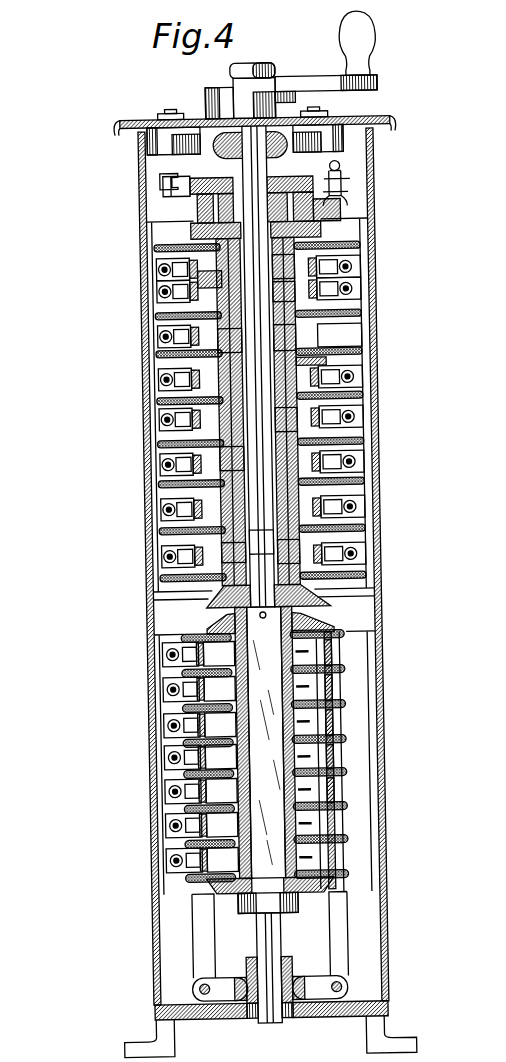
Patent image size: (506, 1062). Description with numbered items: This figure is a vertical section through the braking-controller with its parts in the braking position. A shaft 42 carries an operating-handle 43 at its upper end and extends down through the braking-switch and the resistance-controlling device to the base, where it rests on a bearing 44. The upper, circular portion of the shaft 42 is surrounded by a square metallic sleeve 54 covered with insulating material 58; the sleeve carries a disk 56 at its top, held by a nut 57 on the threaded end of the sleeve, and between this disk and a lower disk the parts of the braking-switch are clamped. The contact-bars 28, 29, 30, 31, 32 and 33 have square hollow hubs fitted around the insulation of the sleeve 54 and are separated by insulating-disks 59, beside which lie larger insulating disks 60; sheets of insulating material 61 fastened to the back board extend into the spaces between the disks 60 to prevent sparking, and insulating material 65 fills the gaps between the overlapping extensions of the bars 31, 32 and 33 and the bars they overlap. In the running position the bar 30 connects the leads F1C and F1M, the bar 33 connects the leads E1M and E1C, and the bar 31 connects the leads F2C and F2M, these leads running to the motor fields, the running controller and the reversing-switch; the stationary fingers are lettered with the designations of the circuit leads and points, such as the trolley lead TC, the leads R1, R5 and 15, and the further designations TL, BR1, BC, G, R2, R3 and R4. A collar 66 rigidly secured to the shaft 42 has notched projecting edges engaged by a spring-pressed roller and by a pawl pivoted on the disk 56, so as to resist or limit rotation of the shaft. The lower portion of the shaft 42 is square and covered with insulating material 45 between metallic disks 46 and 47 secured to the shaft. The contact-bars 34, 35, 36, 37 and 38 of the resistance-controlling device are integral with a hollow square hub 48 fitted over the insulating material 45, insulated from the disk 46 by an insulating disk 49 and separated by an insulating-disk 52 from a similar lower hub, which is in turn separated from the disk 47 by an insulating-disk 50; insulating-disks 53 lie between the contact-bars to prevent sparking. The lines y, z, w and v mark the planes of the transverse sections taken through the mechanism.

The operating-handle 43 is at (372, 88).
The collar 66 is at (196, 190).
The nut 57 is at (286, 184).
The disk 56 is at (327, 231).
The shaft 42 is at (262, 575).
The insulating material 65 is at (162, 248).
The trolley lead TC is at (198, 288).
The contact fingers TL is at (350, 289).
The contact-bar 28 is at (294, 266).
The insulating-disks 59 is at (262, 421).
The contact-bar 30 is at (292, 348).
The insulating material 58 is at (340, 335).
The insulating disks 60 is at (366, 353).
The sheets or boards of insulating material 61 is at (366, 364).
The contact-bar 29 is at (229, 340).
The brake resistance contact BR1 is at (192, 341).
The lead F1M is at (192, 385).
The lead F1C is at (335, 382).
The lead F2M is at (192, 426).
The lead F2C is at (335, 426).
The contact-bar 31 is at (293, 419).
The contact-bar 32 is at (224, 458).
The lead R5 is at (192, 471).
The brake contact BC is at (335, 468).
The lead 15 is at (192, 513).
The contact finger G is at (335, 513).
The metallic tube or sleeve 54 is at (260, 542).
The contact-bar 33 is at (293, 551).
The lead E1C is at (192, 563).
The lead E1M is at (335, 566).
The disk 46 is at (308, 632).
The hollow square-shaped hub 48 is at (236, 720).
The insulating material 45 is at (282, 832).
The lead R1 is at (180, 696).
The resistance contact R2 is at (180, 728).
The resistance contact R3 is at (180, 767).
The resistance contact R4 is at (180, 800).
The insulating disk 49 is at (343, 637).
The contact-bar 34 is at (331, 656).
The contact-bar 35 is at (331, 689).
The contact-bar 36 is at (331, 725).
The contact-bar 37 is at (331, 758).
The contact-bar 38 is at (331, 792).
The insulating-disks 53 is at (343, 706).
The insulating-disk 52 is at (338, 808).
The insulating-disk 50 is at (343, 879).
The disk 47 is at (310, 884).
The bearing 44 is at (251, 1003).
The section line y y is at (447, 160).
The section line z z is at (434, 196).
The section line w w is at (440, 541).
The section line v v is at (440, 641).